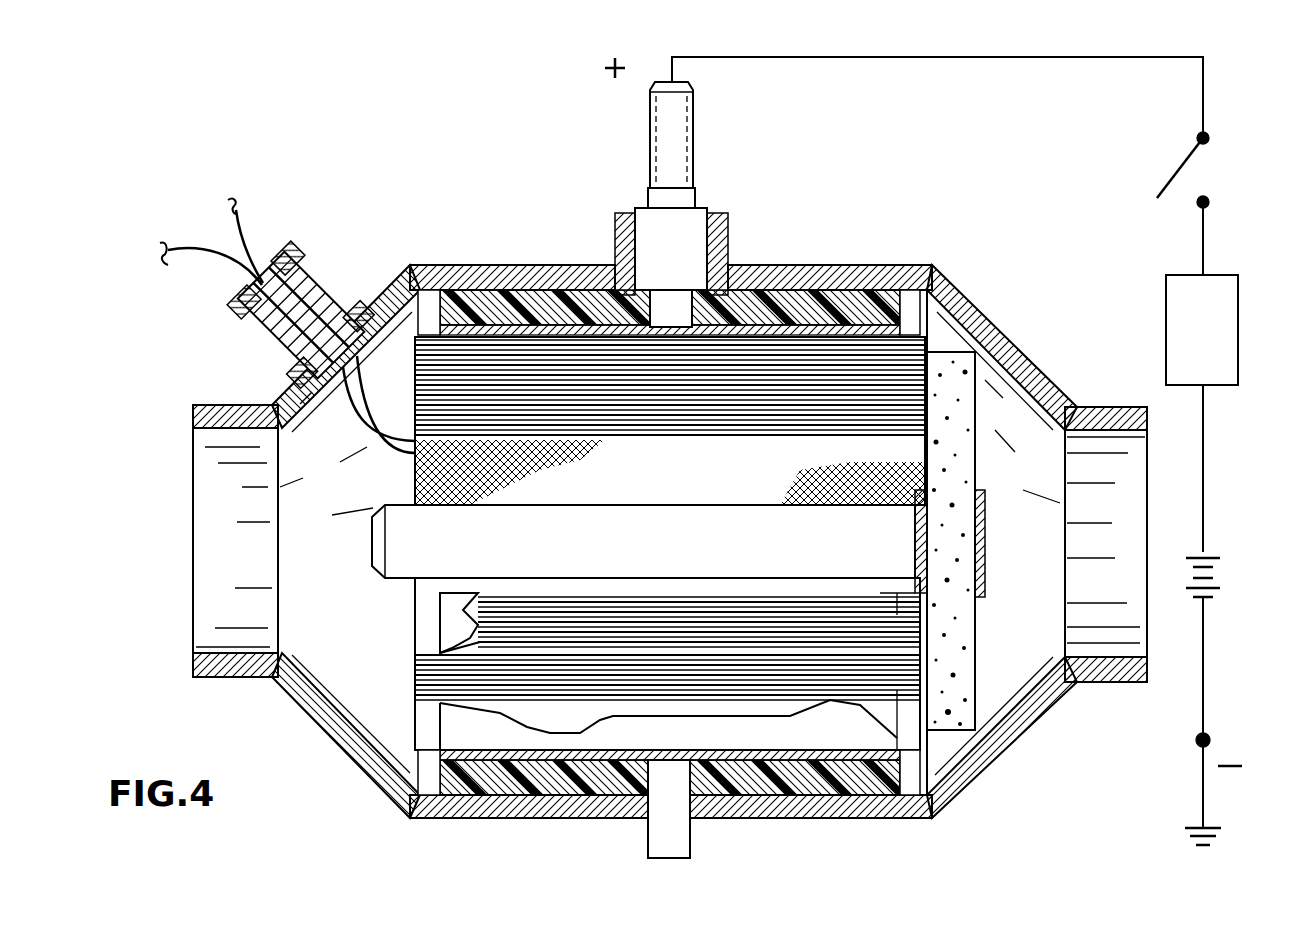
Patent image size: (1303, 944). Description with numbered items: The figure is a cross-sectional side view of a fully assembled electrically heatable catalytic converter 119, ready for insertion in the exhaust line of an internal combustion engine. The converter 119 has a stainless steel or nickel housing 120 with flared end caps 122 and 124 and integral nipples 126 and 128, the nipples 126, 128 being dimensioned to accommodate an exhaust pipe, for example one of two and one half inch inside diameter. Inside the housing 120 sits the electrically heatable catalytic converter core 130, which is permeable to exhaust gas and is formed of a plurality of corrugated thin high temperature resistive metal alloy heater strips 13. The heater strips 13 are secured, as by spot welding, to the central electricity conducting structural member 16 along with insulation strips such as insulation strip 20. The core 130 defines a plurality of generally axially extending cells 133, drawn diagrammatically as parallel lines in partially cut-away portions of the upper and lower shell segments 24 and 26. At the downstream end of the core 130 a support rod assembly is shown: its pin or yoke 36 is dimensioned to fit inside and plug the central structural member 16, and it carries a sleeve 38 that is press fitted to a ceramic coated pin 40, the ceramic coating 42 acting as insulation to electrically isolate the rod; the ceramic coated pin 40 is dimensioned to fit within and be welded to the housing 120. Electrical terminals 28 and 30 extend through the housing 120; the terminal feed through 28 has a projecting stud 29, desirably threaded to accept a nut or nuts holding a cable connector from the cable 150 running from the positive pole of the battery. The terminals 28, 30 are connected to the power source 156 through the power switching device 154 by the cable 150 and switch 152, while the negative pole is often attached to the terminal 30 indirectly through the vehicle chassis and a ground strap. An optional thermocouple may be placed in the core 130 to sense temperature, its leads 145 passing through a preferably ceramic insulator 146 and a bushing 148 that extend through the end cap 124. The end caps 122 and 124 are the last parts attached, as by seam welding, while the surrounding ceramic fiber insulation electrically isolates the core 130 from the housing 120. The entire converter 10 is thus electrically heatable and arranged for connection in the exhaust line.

The motor 10 is at (994, 398).
The corrugated thin heater strips 13 is at (548, 680).
The central electricity conducting structural member 16 is at (408, 558).
The insulation strip 20 is at (413, 480).
The upper shell segment 24 is at (803, 340).
The lower shell segment 26 is at (478, 735).
The terminal feed through 28 is at (710, 162).
The projecting stud 29 is at (693, 127).
The terminal 30 is at (680, 836).
The pin or yoke 36 is at (372, 523).
The sleeve 38 is at (985, 556).
The ceramic coated pin 40 is at (952, 747).
The ceramic coating 42 is at (962, 448).
The electrically heatable catalytic converter 119 is at (503, 152).
The housing 120 is at (458, 278).
The end cap 122 is at (970, 305).
The end cap 124 is at (300, 382).
The nipple 126 is at (1105, 408).
The nipple 128 is at (215, 412).
The electrically heatable catalytic converter core 130 is at (413, 644).
The axially extending cells 133 is at (436, 712).
The lead wire 145 is at (262, 283).
The insulator 146 is at (288, 266).
The bushing 148 is at (364, 298).
The cable 150 is at (985, 57).
The switch 152 is at (1180, 168).
The power switching device 154 is at (1222, 322).
The power source 156 is at (1216, 571).